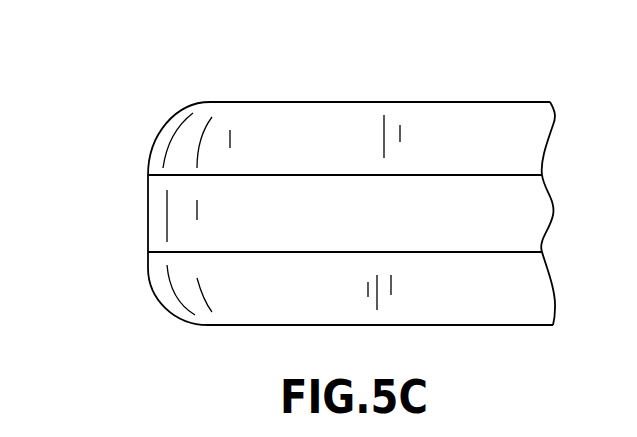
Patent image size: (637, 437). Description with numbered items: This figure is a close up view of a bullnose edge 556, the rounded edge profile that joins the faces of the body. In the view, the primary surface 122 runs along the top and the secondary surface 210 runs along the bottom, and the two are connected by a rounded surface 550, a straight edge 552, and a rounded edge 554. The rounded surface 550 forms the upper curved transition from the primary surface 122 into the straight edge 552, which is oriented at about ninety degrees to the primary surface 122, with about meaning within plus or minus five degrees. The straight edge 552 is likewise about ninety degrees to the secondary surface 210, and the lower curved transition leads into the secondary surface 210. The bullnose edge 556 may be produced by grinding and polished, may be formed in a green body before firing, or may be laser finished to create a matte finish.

The bullnose edge 556 is at (290, 198).
The rounded surface 550 is at (340, 101).
The primary surface 122 is at (277, 101).
The straight edge 552 is at (148, 210).
The rounded edge 554 is at (303, 322).
The secondary surface 210 is at (227, 326).